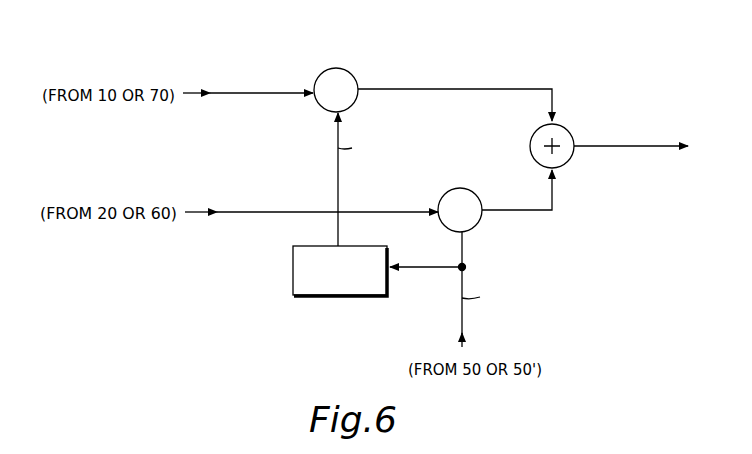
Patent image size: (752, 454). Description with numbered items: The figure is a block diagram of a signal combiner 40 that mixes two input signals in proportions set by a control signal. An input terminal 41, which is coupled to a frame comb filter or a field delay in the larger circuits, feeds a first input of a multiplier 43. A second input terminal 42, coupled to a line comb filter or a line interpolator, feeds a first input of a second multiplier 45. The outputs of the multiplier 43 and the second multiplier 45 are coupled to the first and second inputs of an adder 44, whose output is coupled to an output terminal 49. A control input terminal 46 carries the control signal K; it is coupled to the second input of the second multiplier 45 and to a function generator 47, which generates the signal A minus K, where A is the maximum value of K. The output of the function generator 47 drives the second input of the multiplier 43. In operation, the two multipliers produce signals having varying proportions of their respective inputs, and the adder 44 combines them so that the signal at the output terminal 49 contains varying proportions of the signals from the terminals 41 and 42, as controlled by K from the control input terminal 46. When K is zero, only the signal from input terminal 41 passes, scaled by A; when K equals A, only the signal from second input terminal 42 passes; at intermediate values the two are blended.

The signal combiner 40 is at (487, 62).
The input terminal 41 is at (216, 92).
The second input terminal 42 is at (233, 211).
The multiplier 43 is at (320, 74).
The adder 44 is at (533, 131).
The second multiplier 45 is at (445, 192).
The control input terminal 46 is at (462, 318).
The function generator 47 is at (293, 268).
The output terminal 49 is at (646, 143).